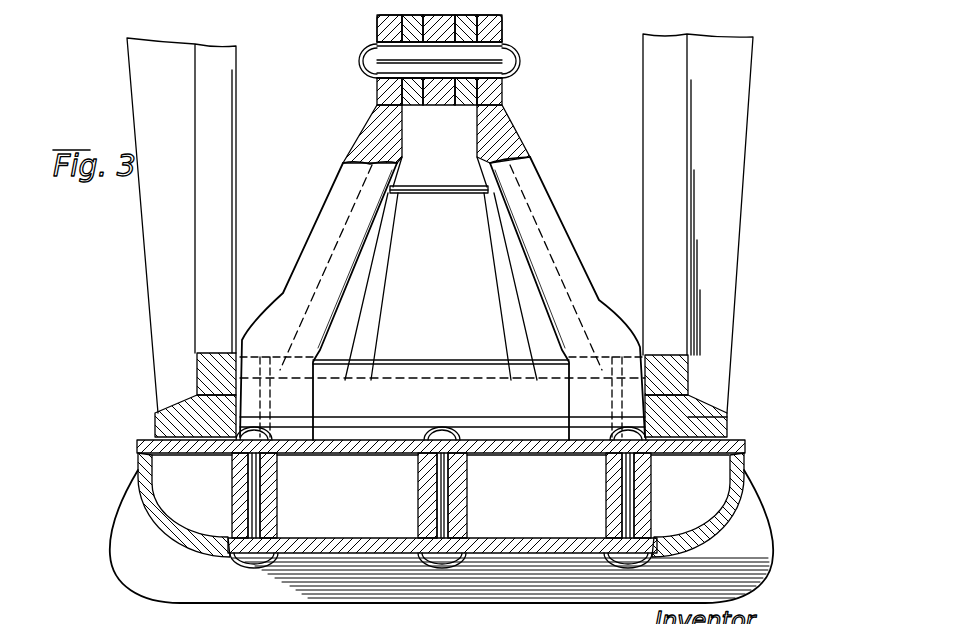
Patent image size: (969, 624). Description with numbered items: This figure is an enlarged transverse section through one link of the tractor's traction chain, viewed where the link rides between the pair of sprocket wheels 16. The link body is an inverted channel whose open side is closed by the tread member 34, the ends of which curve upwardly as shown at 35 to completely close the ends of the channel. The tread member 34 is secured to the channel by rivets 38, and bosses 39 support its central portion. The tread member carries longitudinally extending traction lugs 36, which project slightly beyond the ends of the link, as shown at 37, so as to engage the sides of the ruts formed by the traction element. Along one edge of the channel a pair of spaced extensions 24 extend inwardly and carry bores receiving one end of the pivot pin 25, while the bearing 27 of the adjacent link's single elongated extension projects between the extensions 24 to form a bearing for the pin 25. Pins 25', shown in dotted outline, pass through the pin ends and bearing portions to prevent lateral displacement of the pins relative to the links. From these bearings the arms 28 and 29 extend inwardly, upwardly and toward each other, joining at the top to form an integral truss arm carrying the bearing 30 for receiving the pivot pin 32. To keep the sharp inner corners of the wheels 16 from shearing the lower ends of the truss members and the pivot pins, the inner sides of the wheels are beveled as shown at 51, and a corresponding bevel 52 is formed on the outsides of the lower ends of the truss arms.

The sprocket wheels 16 is at (162, 257).
The spaced extensions 24 is at (300, 410).
The pivot pin 25 is at (442, 371).
The pins 25' is at (437, 267).
The bearing 27 is at (462, 378).
The arm 28 is at (528, 233).
The arm 29 is at (500, 259).
The bearing 30 is at (490, 28).
The pivot pin 32 is at (413, 62).
The tread members 34 is at (545, 560).
The upwardly curved ends 35 is at (138, 478).
The traction lugs 36 is at (330, 590).
The lug extension 37 is at (122, 548).
The rivets 38 is at (254, 492).
The bosses 39 is at (468, 493).
The bevel 51 is at (223, 415).
The bevel 52 is at (232, 391).